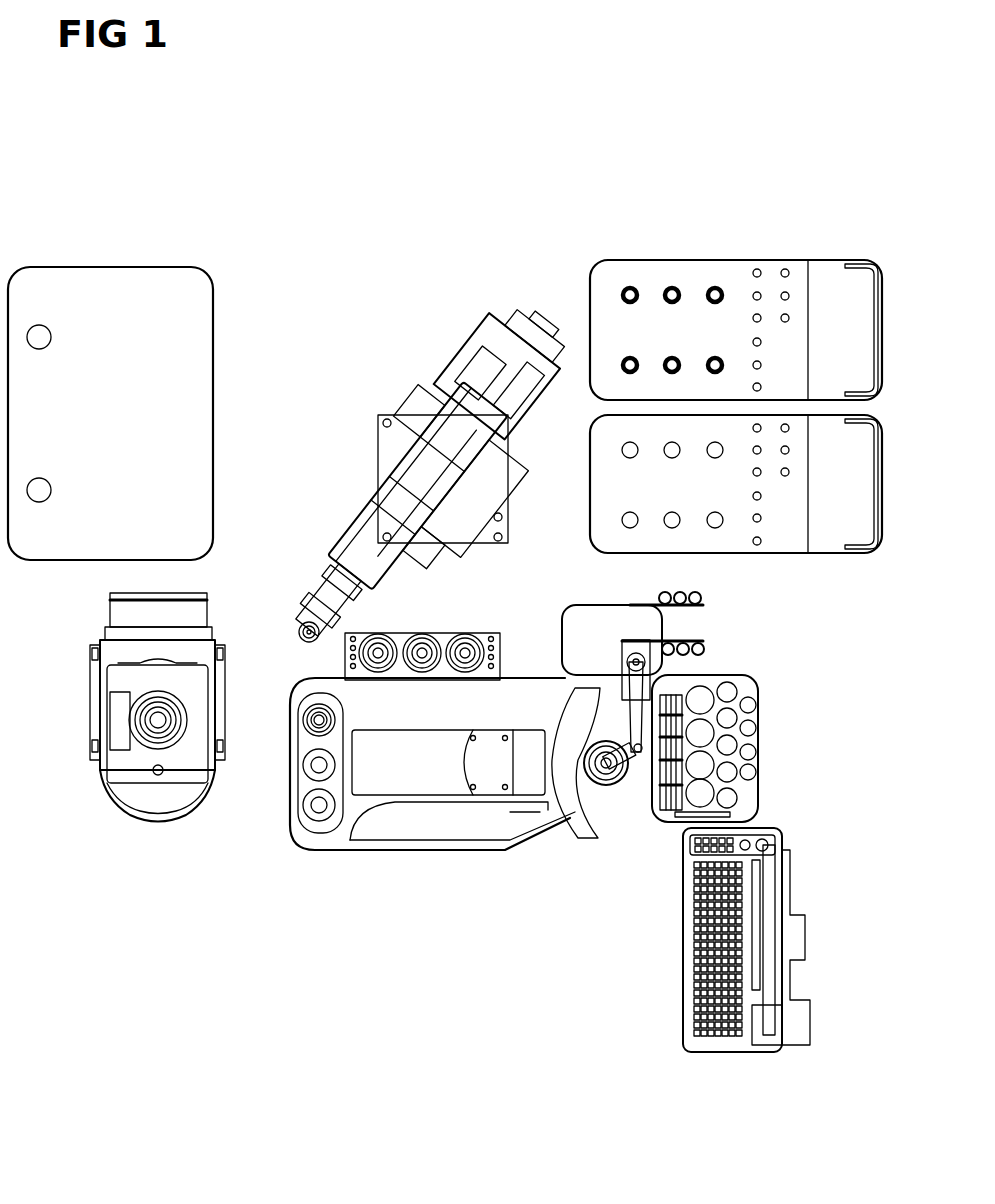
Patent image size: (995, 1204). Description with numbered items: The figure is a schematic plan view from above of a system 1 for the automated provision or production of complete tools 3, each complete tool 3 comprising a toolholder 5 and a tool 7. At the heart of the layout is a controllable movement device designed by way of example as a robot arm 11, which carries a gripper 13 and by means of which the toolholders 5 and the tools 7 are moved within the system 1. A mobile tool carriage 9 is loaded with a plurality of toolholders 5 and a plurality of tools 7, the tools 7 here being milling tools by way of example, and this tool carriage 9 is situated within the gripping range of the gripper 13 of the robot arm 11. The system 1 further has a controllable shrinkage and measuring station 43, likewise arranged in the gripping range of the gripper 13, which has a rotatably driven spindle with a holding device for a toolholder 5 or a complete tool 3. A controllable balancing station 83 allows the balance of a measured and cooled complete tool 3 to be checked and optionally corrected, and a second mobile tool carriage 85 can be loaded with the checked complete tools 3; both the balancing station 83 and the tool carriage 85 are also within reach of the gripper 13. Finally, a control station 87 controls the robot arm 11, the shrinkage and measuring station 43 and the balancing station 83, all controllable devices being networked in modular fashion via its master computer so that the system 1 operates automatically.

The system 1 is at (763, 142).
The complete tool 3 is at (378, 652).
The toolholder 5 is at (628, 295).
The tool 7 is at (754, 296).
The mobile tool carriage 9 is at (709, 299).
The robot arm 11 is at (430, 479).
The gripper 13 is at (302, 620).
The shrinkage and measuring station 43 is at (470, 835).
The balancing station 83 is at (135, 690).
The mobile tool carriage 85 is at (832, 535).
The control station 87 is at (182, 345).